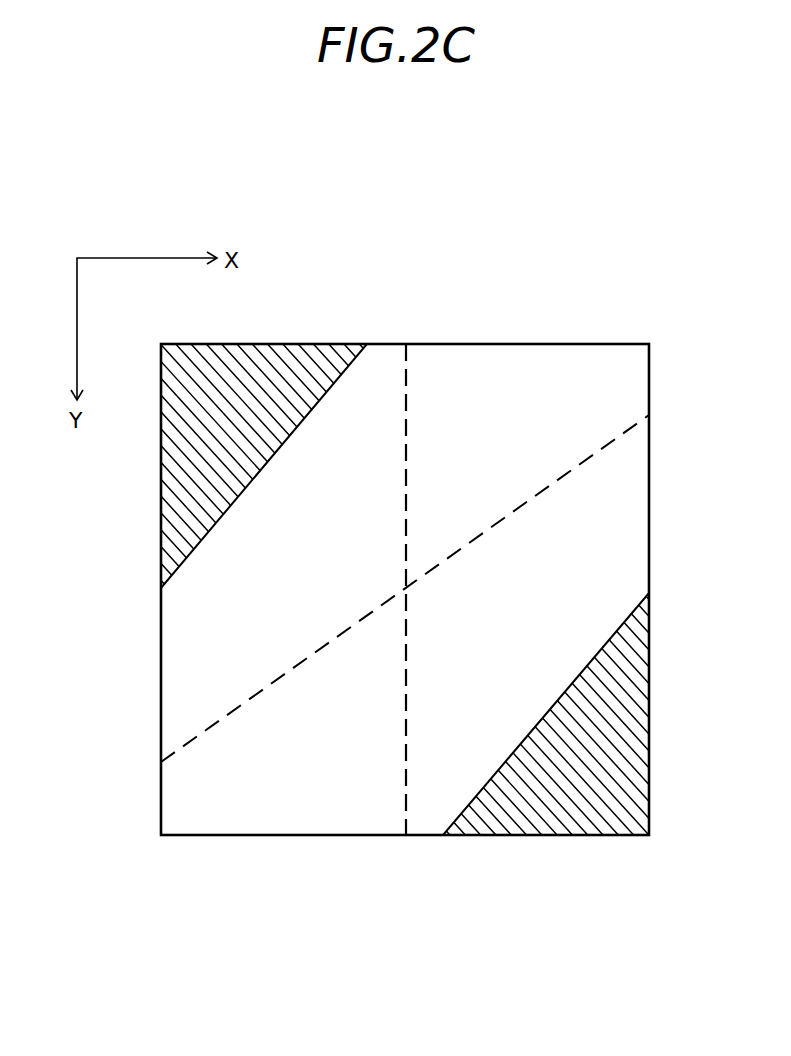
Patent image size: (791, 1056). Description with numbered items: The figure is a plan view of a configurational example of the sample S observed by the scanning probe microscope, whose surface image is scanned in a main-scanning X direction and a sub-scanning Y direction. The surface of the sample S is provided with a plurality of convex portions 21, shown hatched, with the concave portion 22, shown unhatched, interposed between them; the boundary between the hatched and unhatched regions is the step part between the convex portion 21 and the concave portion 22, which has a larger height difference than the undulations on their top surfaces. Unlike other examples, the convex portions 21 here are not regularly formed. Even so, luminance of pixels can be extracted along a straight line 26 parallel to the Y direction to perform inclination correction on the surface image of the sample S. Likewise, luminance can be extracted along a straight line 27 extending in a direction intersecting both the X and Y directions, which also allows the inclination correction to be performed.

The convex portion 21 is at (312, 351).
The concave portion 22 is at (203, 823).
The straight line 26 is at (408, 440).
The straight line 27 is at (259, 692).
The sample S is at (443, 258).